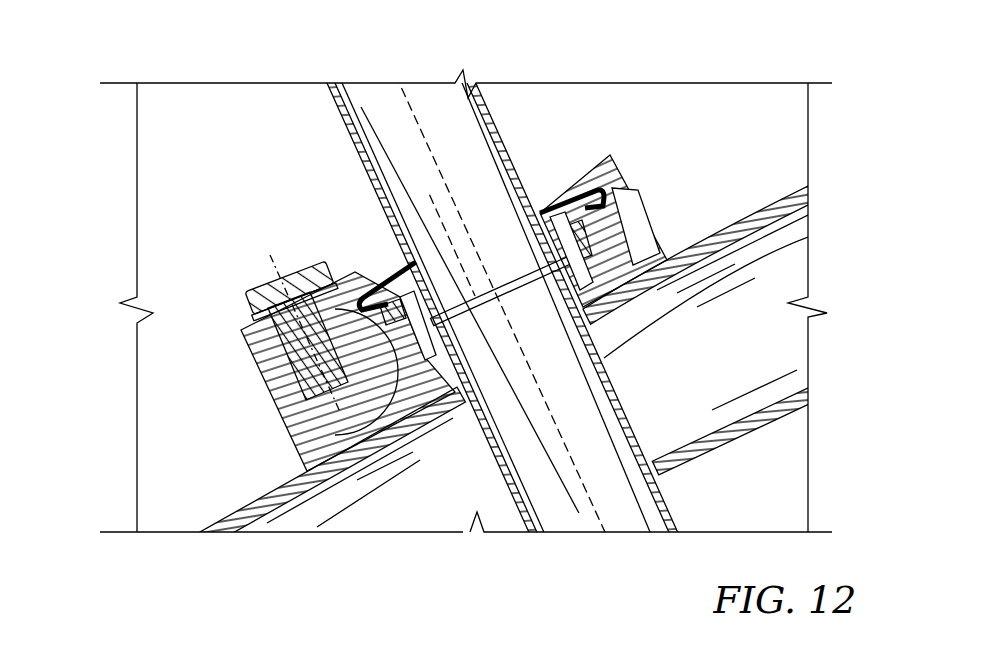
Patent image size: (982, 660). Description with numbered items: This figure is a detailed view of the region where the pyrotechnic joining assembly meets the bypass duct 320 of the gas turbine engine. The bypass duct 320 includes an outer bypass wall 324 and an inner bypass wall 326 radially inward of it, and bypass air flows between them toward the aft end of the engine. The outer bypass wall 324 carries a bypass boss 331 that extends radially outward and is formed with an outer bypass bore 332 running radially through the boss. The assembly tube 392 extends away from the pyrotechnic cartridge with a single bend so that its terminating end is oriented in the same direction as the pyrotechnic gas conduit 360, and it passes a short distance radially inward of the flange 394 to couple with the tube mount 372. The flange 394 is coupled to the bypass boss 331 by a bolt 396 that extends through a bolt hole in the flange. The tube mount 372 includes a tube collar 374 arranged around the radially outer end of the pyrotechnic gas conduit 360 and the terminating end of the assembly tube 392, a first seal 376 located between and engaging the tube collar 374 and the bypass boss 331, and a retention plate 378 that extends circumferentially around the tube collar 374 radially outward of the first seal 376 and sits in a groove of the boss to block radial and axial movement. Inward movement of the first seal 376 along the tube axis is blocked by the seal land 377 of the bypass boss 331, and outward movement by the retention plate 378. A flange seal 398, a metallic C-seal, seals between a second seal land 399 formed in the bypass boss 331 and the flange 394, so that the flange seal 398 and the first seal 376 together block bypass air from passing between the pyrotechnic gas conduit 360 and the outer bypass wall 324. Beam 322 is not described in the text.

The bypass duct 320 is at (735, 254).
The beam / support member 322 is at (472, 308).
The outer bypass wall 324 is at (773, 193).
The inner bypass wall 326 is at (768, 417).
The bypass boss 331 is at (305, 445).
The outer bypass bore 332 is at (459, 400).
The pyrotechnic gas conduit 360 is at (633, 413).
The tube mount 372 is at (707, 163).
The tube collar 374 is at (310, 450).
The first seal 376 is at (598, 224).
The seal land 377 is at (345, 356).
The retention plate 378 is at (570, 218).
The assembly tube 392 is at (430, 292).
The flange 394 is at (246, 319).
The bolt 396 is at (243, 292).
The flange seal 398 is at (365, 283).
The second seal land 399 is at (247, 326).